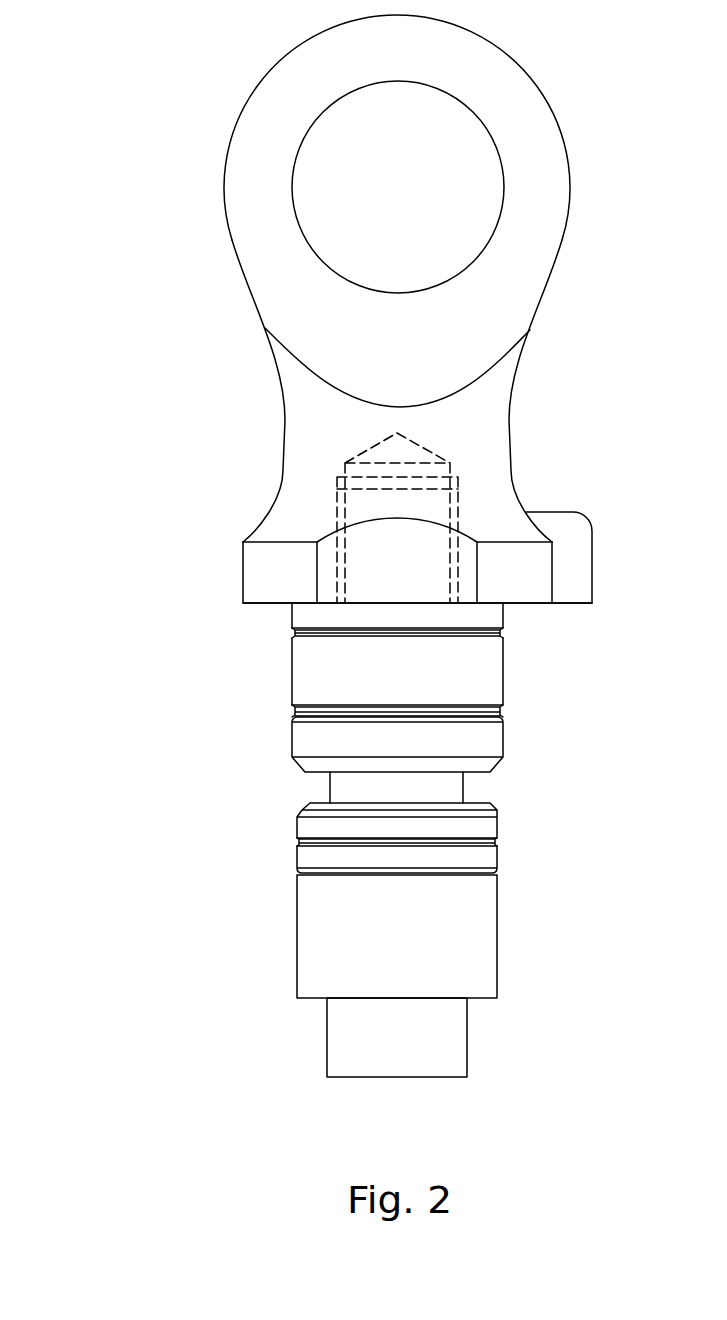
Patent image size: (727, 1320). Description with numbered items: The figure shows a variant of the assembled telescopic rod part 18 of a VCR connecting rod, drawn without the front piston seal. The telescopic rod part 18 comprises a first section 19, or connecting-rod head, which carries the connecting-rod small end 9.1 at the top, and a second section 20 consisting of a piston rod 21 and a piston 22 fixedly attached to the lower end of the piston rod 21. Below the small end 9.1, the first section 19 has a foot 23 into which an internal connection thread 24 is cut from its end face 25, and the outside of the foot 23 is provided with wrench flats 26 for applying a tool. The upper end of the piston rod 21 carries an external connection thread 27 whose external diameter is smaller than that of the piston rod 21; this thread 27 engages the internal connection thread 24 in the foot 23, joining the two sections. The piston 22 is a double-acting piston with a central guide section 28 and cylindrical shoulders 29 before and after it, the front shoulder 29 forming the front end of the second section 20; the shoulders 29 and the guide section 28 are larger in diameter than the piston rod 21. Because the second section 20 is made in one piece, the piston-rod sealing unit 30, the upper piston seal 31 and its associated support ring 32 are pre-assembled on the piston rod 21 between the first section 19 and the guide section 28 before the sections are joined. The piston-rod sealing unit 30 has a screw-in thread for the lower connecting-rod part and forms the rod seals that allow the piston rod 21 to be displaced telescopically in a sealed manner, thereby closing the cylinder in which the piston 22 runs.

The connecting-rod small end 9.1 is at (307, 193).
The telescopic rod part 18 is at (317, 530).
The first section 19 is at (343, 309).
The second section 20 is at (389, 708).
The piston rod 21 is at (343, 783).
The piston 22 is at (376, 940).
The foot 23 is at (293, 408).
The connection thread 24 is at (348, 517).
The end face 25 is at (273, 622).
The wrench flats 26 is at (332, 572).
The connection thread 27 is at (455, 507).
The guide section 28 is at (485, 933).
The cylindrical shoulder 29 is at (457, 1048).
The piston-rod sealing unit 30 is at (528, 697).
The upper piston seal 31 is at (503, 857).
The support ring 32 is at (503, 823).